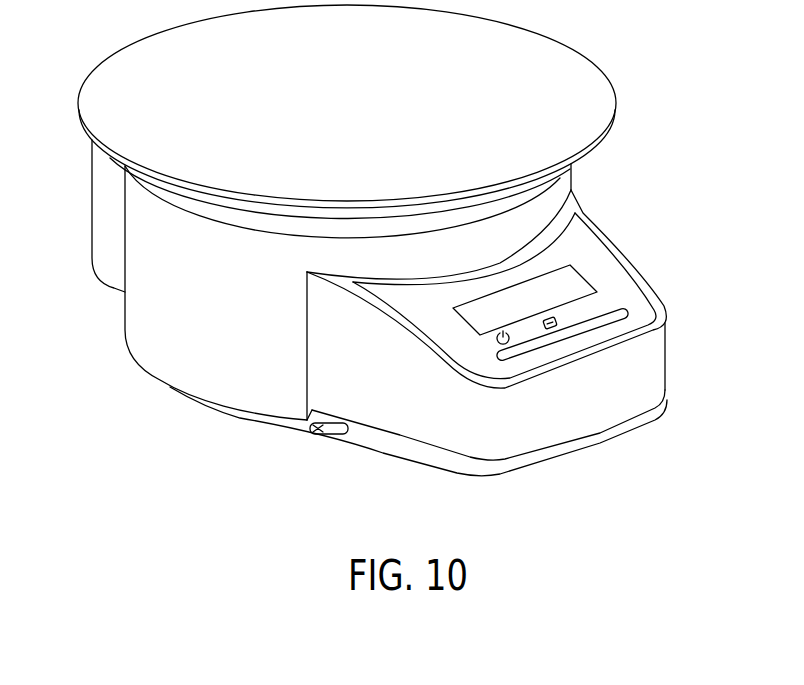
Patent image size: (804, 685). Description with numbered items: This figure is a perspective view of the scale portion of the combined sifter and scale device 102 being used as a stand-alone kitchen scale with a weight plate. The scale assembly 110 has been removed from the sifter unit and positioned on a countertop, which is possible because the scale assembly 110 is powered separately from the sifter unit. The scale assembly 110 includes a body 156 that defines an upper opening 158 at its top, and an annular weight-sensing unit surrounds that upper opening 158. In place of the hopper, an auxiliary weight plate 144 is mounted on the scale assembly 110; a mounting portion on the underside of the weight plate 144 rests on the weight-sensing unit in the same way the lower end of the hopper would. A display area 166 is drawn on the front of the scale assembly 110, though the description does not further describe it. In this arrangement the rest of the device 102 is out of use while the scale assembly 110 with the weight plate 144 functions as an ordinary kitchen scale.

The device 102 is at (660, 211).
The scale assembly 110 is at (137, 397).
The auxiliary weight plate 144 is at (572, 80).
The body 156 is at (222, 372).
The upper opening 158 is at (193, 197).
The display 166 is at (493, 313).